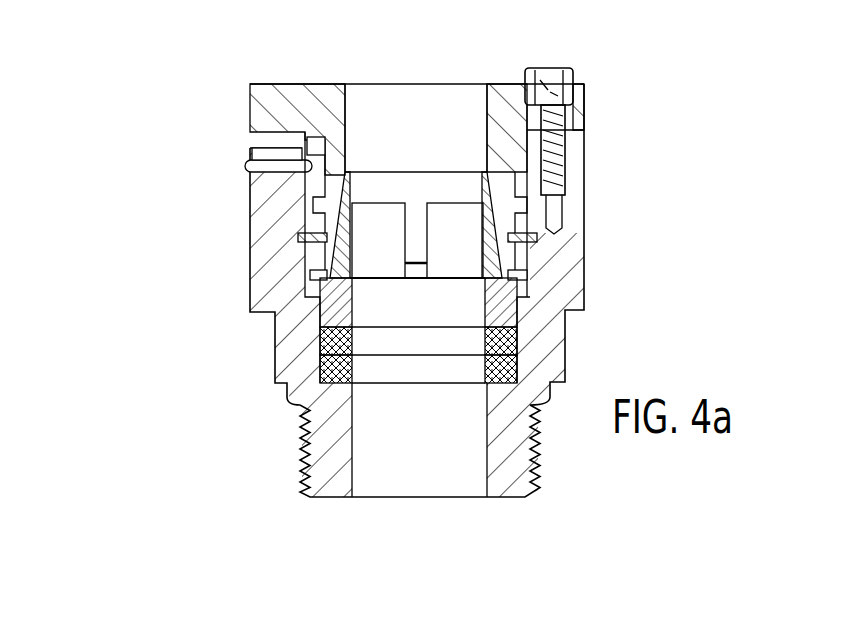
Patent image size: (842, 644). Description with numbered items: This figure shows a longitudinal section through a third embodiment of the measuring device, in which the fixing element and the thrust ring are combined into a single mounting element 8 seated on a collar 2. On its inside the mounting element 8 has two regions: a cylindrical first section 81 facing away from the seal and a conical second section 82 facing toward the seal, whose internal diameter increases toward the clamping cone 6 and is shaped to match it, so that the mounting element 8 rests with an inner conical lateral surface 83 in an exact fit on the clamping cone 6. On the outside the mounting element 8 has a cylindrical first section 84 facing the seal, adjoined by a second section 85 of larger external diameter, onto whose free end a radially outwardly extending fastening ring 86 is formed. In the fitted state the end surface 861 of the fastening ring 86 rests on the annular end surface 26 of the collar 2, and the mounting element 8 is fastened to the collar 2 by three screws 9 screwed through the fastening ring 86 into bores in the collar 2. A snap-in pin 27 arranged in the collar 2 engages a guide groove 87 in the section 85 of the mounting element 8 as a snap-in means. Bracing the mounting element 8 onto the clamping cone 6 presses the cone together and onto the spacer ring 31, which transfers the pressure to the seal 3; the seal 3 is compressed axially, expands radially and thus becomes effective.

The collar 2 is at (146, 226).
The seal 3 is at (325, 347).
The clamping cone 6 is at (533, 262).
The mounting element 8 is at (318, 98).
The screws 9 is at (562, 70).
The annular end surface 26 is at (256, 166).
The snap-in pin 27 is at (300, 168).
The spacer ring 31 is at (322, 305).
The cylindrical first section 81 is at (495, 118).
The conical second section 82 is at (487, 193).
The inner conical lateral surface 83 is at (310, 275).
The cylindrical first section 84 is at (537, 243).
The second section 85 is at (566, 182).
The fastening ring 86 is at (262, 103).
The guide groove 87 is at (298, 238).
The end surface 861 is at (260, 140).